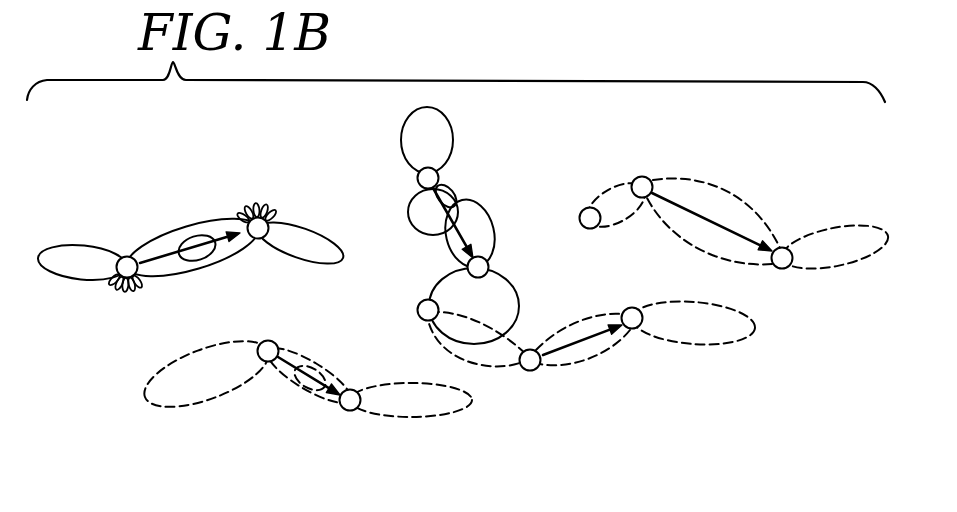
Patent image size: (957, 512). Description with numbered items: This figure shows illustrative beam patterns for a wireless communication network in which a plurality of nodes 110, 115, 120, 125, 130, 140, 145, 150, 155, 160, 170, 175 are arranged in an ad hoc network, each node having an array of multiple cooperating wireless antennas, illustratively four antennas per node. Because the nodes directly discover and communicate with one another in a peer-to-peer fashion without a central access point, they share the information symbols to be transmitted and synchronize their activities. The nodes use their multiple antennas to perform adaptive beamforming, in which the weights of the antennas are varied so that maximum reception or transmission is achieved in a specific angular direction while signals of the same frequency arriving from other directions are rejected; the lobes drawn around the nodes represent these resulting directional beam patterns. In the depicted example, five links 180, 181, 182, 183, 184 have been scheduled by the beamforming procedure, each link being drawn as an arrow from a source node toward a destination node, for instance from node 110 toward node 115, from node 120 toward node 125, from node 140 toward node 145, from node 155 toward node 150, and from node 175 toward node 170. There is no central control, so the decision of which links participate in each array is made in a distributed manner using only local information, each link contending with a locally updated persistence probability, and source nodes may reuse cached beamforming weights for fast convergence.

The node 110 is at (125, 256).
The node 115 is at (255, 240).
The node 120 is at (263, 363).
The node 125 is at (348, 412).
The node 130 is at (423, 300).
The node 140 is at (418, 177).
The node 145 is at (492, 266).
The node 150 is at (637, 308).
The node 155 is at (532, 372).
The node 160 is at (583, 218).
The node 170 is at (787, 250).
The node 175 is at (643, 180).
The link 180 is at (198, 237).
The link 181 is at (325, 383).
The link 182 is at (452, 193).
The link 183 is at (583, 343).
The link 184 is at (708, 217).